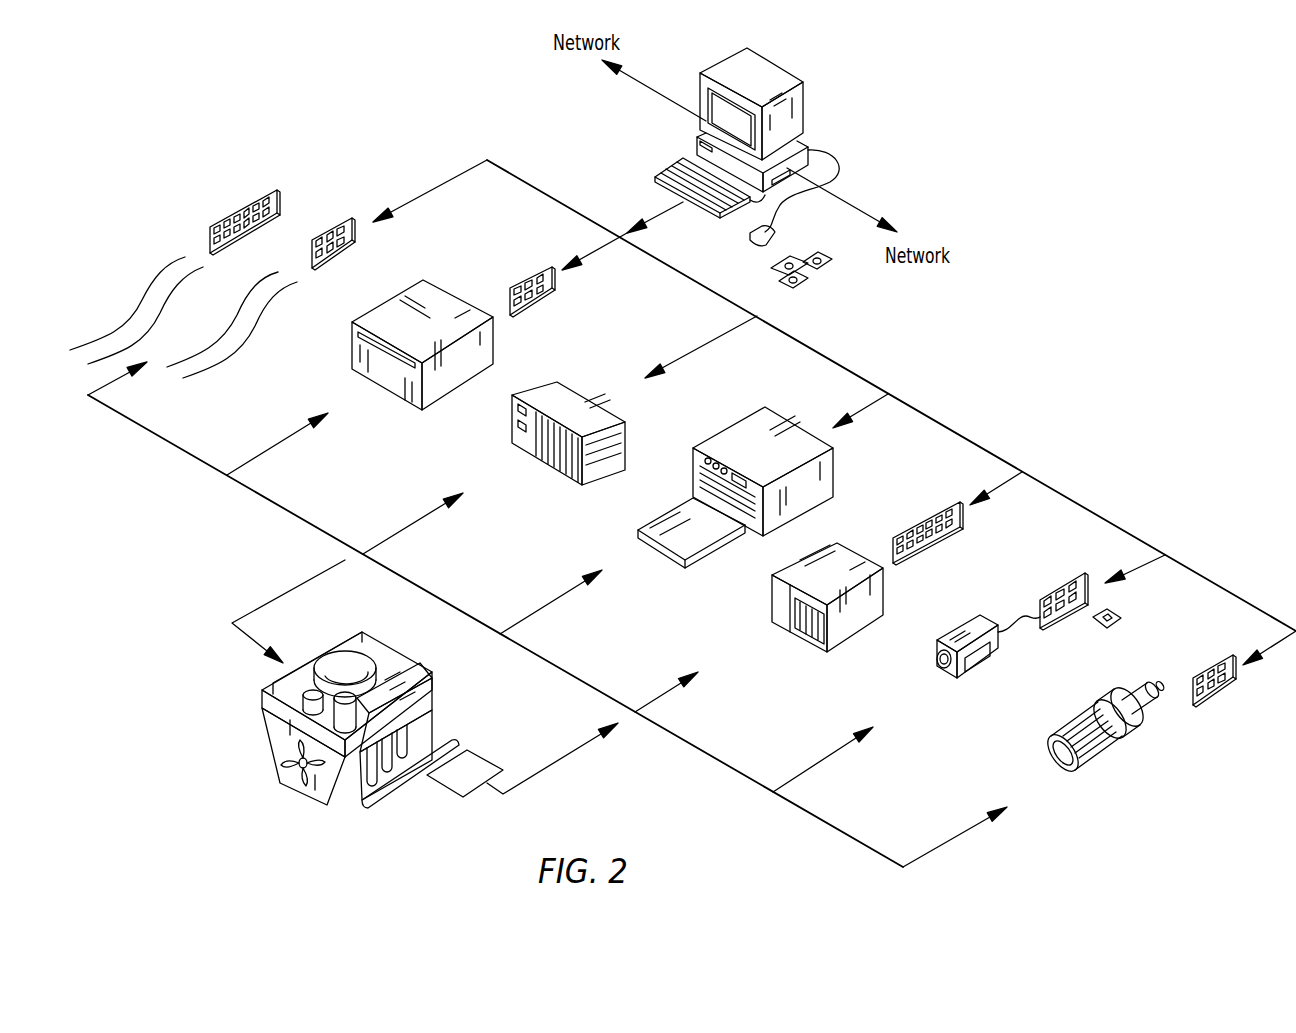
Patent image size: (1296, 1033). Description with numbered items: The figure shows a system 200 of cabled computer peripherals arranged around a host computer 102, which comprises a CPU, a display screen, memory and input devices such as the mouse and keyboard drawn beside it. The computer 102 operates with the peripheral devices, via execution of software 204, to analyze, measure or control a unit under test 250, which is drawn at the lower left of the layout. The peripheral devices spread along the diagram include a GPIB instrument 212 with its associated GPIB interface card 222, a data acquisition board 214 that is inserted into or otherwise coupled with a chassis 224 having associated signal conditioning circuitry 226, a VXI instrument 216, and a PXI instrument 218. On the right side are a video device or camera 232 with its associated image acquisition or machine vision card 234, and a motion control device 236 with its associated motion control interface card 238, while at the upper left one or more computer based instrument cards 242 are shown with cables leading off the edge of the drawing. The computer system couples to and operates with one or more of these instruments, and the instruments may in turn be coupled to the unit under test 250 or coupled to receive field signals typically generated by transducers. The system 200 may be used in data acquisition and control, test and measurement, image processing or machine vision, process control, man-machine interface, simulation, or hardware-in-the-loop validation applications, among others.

The host computer 102 is at (773, 70).
The system 200 is at (1060, 182).
The software 204 is at (803, 284).
The GPIB instrument 212 is at (388, 311).
The data acquisition board 214 is at (948, 505).
The VXI instrument 216 is at (733, 442).
The PXI instrument 218 is at (577, 400).
The GPIB interface card 222 is at (527, 282).
The chassis 224 is at (783, 605).
The signal conditioning circuitry 226 is at (798, 628).
The video device or camera 232 is at (970, 663).
The image acquisition card 234 is at (1060, 588).
The motion control device 236 is at (1105, 753).
The motion control interface card 238 is at (1217, 695).
The computer based instrument cards 242 is at (222, 220).
The unit under test 250 is at (275, 733).